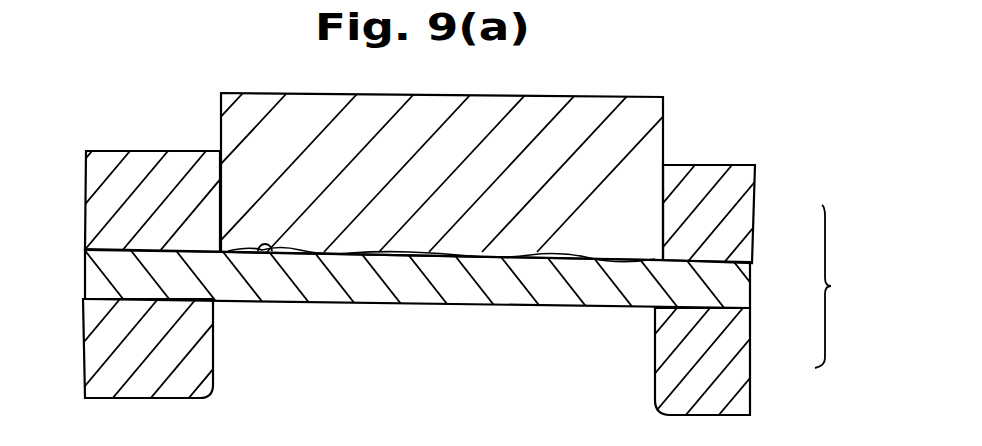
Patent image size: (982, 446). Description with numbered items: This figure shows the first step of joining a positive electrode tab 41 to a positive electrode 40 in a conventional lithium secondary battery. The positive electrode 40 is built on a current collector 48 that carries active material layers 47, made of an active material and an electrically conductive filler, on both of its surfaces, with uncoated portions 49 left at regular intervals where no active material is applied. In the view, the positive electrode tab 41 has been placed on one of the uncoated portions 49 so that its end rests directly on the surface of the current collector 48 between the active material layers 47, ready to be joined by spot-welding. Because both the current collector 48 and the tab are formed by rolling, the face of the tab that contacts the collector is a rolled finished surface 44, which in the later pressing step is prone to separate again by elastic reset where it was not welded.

The positive electrode 40 is at (841, 286).
The positive electrode tab 41 is at (642, 110).
The rolled finished surface 44 is at (478, 258).
The active material layers 47 is at (100, 190).
The current collector 48 is at (728, 279).
The uncoated portions 49 is at (253, 251).